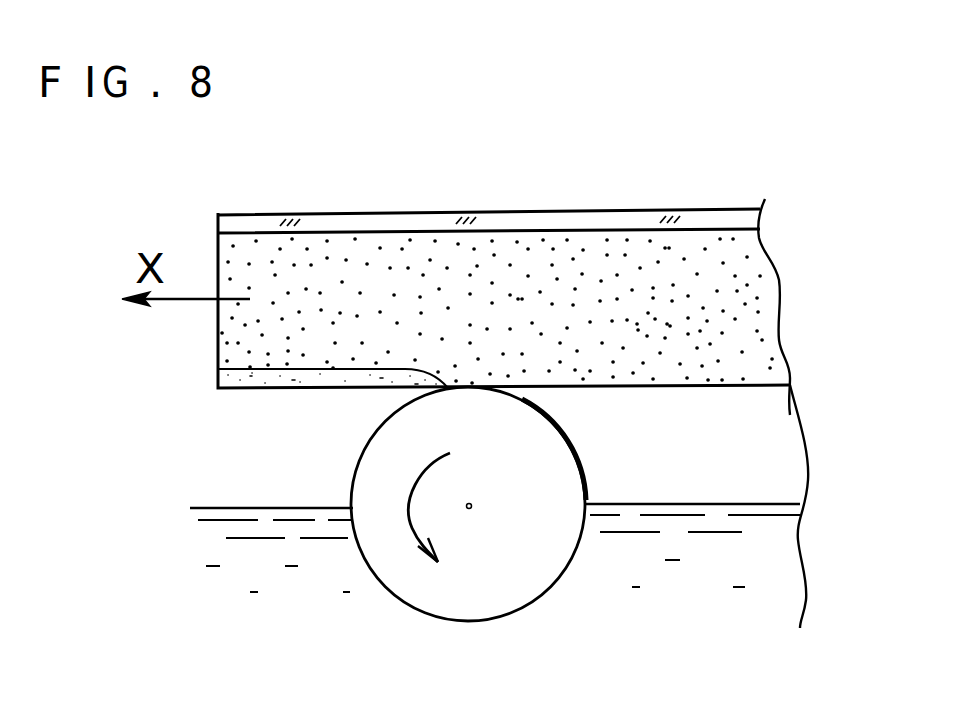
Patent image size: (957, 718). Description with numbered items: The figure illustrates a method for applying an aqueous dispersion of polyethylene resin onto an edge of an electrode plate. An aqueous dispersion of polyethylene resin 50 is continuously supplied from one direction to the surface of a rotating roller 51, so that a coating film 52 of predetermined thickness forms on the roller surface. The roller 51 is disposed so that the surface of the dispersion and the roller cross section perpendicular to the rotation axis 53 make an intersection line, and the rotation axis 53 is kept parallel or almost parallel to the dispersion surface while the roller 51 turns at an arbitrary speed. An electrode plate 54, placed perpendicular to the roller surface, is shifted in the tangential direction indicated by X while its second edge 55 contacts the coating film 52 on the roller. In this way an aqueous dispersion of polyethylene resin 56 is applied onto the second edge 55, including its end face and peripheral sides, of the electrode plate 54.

The aqueous dispersion of polyethylene resin 50 is at (775, 600).
The roller 51 is at (480, 600).
The coating film 52 is at (585, 470).
The rotation axis 53 is at (473, 506).
The electrode plate 54 is at (563, 207).
The second edge 55 is at (728, 388).
The aqueous dispersion of polyethylene resin 56 is at (297, 378).